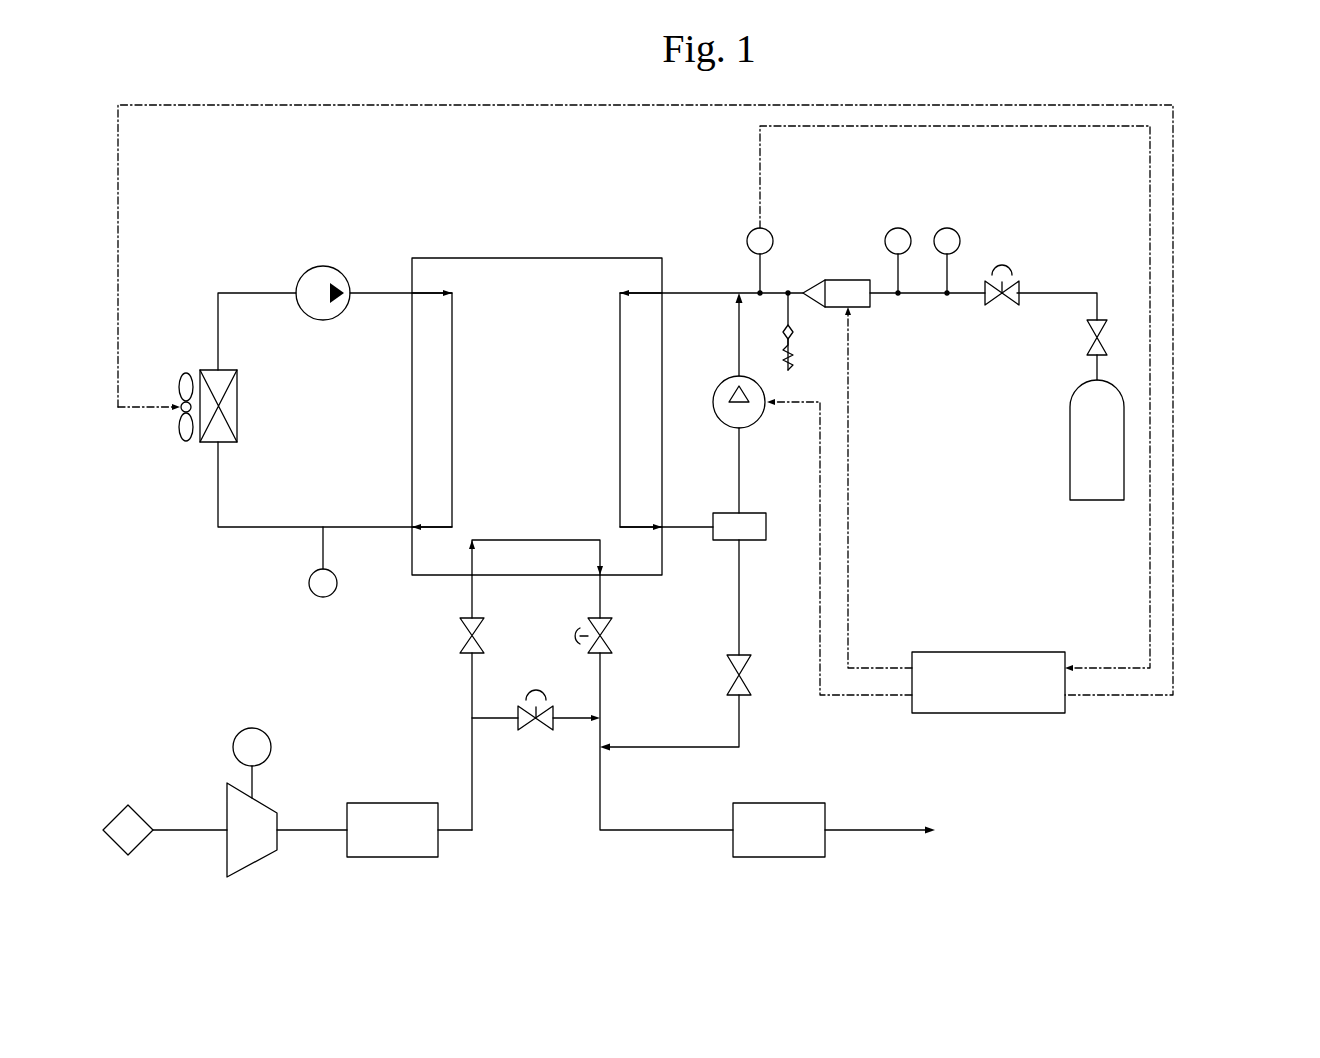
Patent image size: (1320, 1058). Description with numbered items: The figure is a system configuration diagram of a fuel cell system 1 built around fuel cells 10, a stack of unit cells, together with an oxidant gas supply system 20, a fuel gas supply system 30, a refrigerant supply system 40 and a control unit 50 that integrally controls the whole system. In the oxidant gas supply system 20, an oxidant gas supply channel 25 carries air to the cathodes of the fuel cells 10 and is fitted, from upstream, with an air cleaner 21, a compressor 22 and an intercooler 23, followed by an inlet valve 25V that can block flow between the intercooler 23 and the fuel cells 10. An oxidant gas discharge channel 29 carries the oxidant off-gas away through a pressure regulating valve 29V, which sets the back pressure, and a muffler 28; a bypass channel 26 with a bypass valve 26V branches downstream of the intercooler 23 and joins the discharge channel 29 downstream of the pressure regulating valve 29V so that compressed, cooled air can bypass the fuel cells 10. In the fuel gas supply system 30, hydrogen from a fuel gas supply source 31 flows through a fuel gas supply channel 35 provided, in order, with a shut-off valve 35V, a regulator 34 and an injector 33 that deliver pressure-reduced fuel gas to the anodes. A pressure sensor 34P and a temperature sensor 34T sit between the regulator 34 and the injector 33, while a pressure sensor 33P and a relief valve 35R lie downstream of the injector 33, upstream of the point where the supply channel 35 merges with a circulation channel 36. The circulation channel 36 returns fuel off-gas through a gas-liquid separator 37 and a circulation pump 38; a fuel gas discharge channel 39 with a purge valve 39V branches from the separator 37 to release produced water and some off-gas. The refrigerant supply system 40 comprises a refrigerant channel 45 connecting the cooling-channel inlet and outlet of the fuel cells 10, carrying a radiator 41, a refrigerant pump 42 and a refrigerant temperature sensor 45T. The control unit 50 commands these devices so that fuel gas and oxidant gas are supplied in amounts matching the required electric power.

The fuel cell system 1 is at (1216, 167).
The fuel cells 10 is at (490, 258).
The oxidant gas supply system 20 is at (285, 694).
The air cleaner 21 is at (145, 818).
The compressor 22 is at (262, 860).
The intercooler 23 is at (395, 857).
The oxidant gas supply channel 25 is at (472, 745).
The inlet valve 25V is at (460, 640).
The bypass channel 26 is at (568, 725).
The bypass valve 26V is at (532, 735).
The muffler 28 is at (778, 857).
The oxidant gas discharge channel 29 is at (602, 782).
The pressure regulating valve 29V is at (612, 640).
The fuel gas supply system 30 is at (1020, 539).
The fuel gas supply source 31 is at (1070, 450).
The injector 33 is at (845, 280).
The pressure sensor 33P is at (747, 236).
The regulator 34 is at (994, 310).
The pressure sensor 34P is at (897, 228).
The temperature sensor 34T is at (945, 228).
The fuel gas supply channel 35 is at (778, 288).
The relief valve 35R is at (795, 352).
The shut-off valve 35V is at (1087, 336).
The circulation channel 36 is at (738, 470).
The gas-liquid separator 37 is at (752, 542).
The circulation pump 38 is at (720, 383).
The fuel gas discharge channel 39 is at (742, 720).
The purge valve 39V is at (727, 678).
The refrigerant supply system 40 is at (219, 274).
The radiator 41 is at (237, 405).
The refrigerant pump 42 is at (323, 266).
The refrigerant channel 45 is at (218, 338).
The refrigerant temperature sensor 45T is at (332, 598).
The control unit 50 is at (1028, 713).